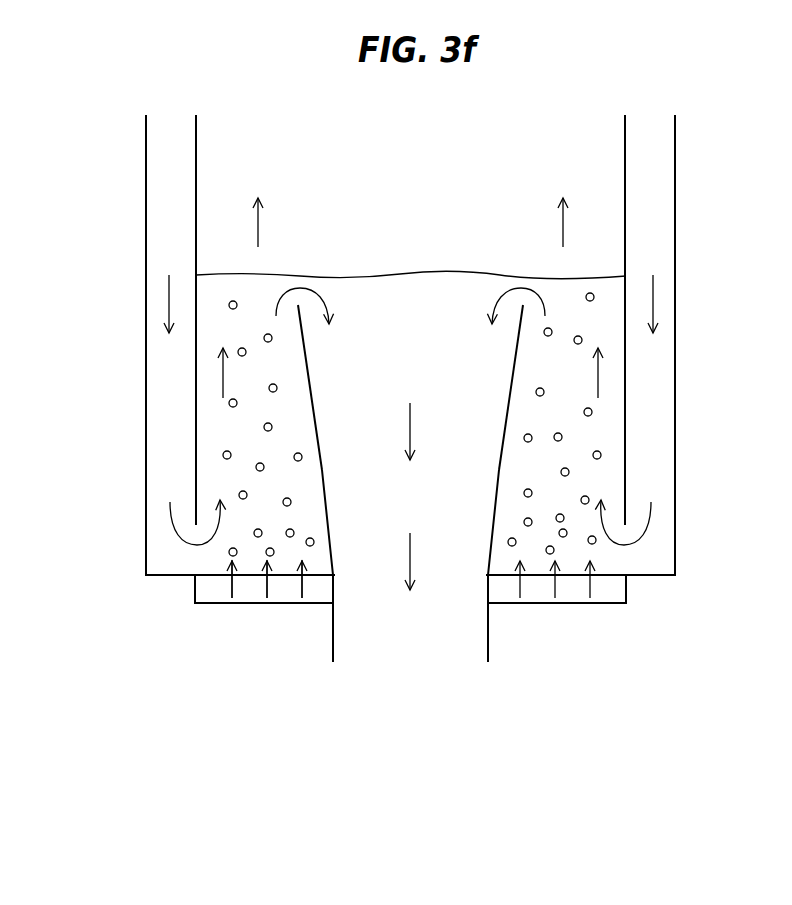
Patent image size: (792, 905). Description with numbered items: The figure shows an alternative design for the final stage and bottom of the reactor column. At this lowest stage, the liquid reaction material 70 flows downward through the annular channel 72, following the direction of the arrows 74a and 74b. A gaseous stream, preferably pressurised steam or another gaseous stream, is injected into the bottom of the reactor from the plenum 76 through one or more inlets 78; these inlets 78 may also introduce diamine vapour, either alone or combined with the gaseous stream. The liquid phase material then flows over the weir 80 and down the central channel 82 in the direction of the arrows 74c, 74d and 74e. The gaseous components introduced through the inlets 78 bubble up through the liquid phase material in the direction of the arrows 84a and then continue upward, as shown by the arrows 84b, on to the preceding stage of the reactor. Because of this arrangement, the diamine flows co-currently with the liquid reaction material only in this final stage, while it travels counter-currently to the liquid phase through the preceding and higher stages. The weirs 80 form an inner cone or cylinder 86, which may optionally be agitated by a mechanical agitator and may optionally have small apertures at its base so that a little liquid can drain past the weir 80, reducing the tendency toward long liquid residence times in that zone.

The liquid reaction material 70 is at (157, 219).
The annular channel 72 is at (157, 405).
The arrow 74a is at (169, 302).
The arrow 74b is at (192, 548).
The arrow 74c is at (334, 310).
The arrow 74d is at (410, 425).
The arrow 74e is at (410, 553).
The plenum 76 is at (195, 604).
The inlets 78 is at (232, 603).
The weir 80 is at (310, 392).
The channel 82 is at (415, 637).
The arrow 84a is at (223, 375).
The arrow 84b is at (258, 220).
The inner cone or cylinder 86 is at (323, 477).